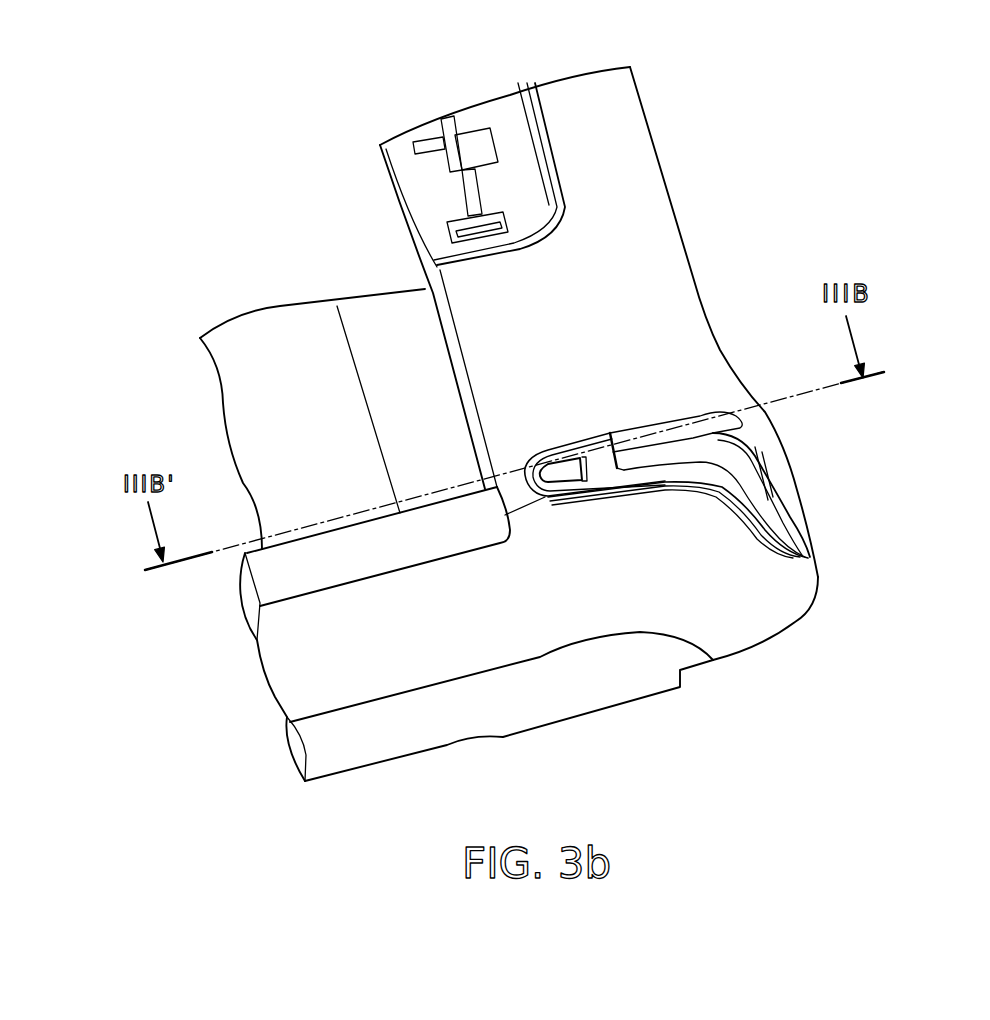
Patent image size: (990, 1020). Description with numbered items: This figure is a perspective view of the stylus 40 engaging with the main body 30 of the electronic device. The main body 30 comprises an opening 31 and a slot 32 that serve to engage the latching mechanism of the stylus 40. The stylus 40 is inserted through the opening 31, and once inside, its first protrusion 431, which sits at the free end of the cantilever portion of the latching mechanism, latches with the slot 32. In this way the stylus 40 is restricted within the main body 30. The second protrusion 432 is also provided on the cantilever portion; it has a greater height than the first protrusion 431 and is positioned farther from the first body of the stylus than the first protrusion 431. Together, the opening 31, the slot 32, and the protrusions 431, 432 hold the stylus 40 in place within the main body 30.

The main body 30 is at (695, 277).
The opening 31 is at (790, 475).
The slot 32 is at (590, 460).
The stylus 40 is at (738, 418).
The first protrusion 431 is at (541, 497).
The second protrusion 432 is at (662, 438).